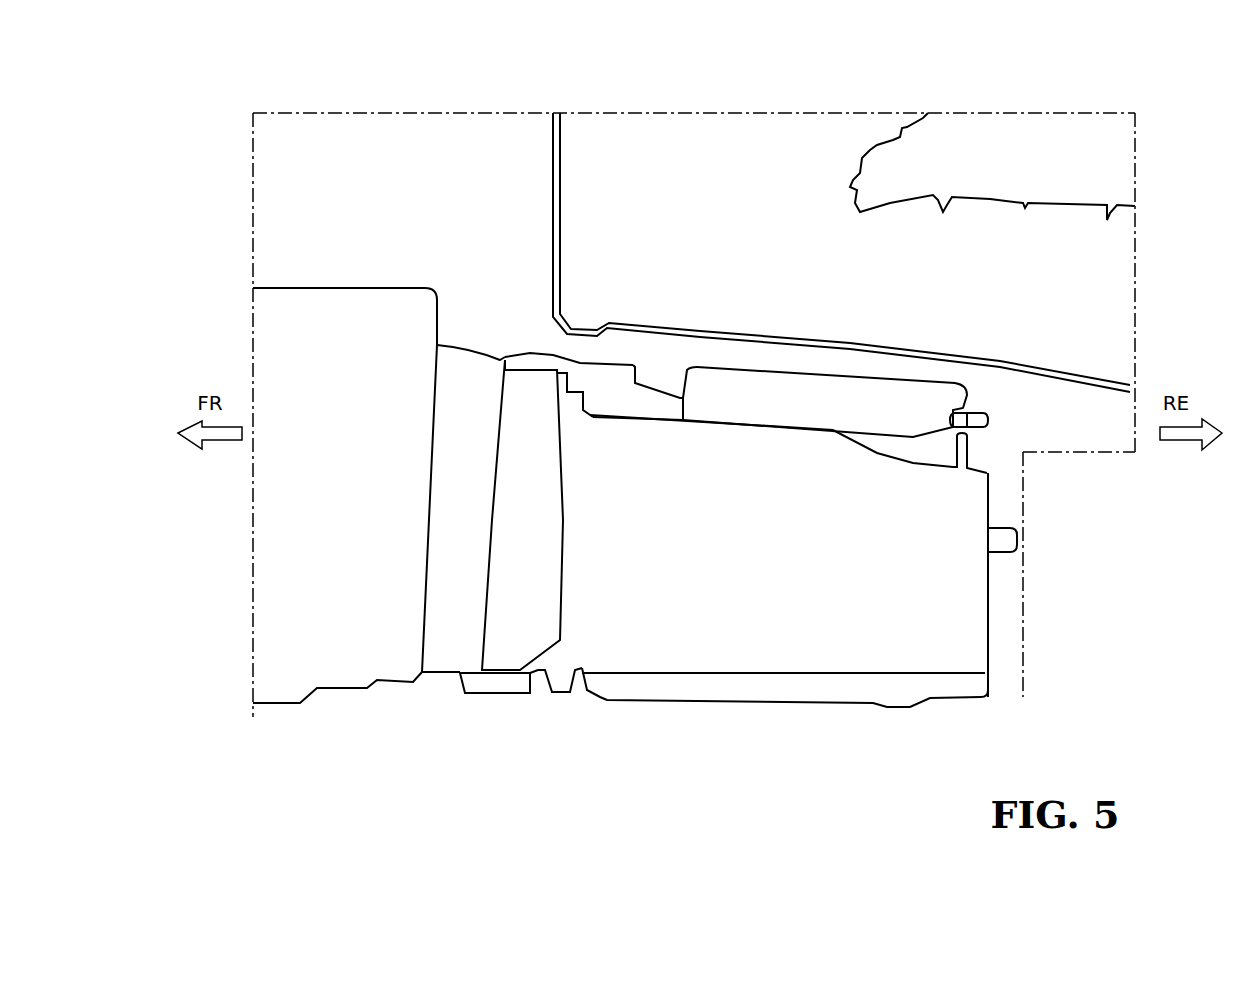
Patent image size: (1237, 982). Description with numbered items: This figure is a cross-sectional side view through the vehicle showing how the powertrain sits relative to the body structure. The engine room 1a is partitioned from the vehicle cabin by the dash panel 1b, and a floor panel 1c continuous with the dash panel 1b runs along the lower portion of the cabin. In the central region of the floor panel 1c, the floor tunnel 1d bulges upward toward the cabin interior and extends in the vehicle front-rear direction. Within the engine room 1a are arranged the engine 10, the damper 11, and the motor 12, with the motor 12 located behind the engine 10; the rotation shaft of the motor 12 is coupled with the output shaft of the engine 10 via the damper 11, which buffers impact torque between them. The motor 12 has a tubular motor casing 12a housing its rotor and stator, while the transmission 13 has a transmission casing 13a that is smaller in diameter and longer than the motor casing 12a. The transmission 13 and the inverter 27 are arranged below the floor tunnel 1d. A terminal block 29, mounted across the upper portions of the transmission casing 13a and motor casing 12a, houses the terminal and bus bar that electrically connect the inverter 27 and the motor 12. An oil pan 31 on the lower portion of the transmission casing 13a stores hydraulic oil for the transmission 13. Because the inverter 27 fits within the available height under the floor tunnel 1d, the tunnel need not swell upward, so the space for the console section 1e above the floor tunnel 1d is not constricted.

The engine room 1a is at (380, 160).
The dash panel 1b is at (560, 173).
The floor panel 1c is at (715, 333).
The floor tunnel 1d is at (880, 340).
The section 1e is at (992, 197).
The engine 10 is at (312, 323).
The damper 11 is at (448, 640).
The motor 12 is at (527, 570).
The motor casing 12a is at (527, 397).
The transmission 13 is at (787, 640).
The transmission casing 13a is at (950, 568).
The inverter 27 is at (907, 400).
The terminal block 29 is at (615, 378).
The oil pan 31 is at (910, 687).